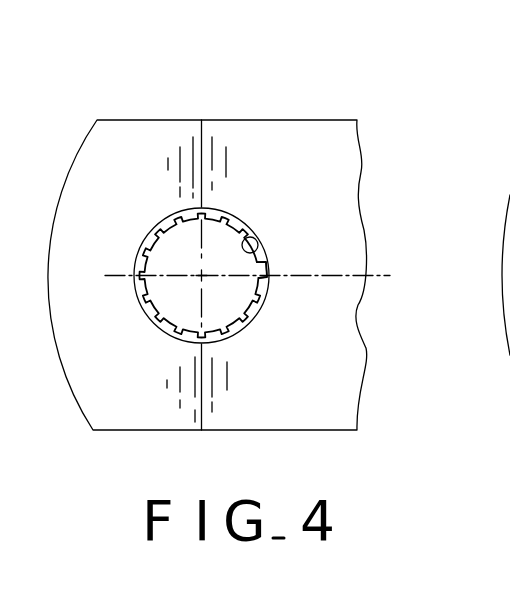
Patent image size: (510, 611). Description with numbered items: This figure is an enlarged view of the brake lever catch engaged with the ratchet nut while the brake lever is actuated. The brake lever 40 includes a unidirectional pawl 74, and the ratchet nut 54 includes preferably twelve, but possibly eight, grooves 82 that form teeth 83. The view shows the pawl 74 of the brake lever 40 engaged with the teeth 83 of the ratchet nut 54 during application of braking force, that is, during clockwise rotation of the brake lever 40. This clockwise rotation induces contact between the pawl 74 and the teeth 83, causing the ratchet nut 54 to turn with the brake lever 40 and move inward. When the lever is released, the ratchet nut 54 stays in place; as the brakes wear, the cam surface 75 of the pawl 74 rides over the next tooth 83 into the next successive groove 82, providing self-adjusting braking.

The brake lever 40 is at (312, 125).
The ratchet nut 54 is at (175, 311).
The unidirectional pawl 74 is at (265, 260).
The cam surface 75 is at (251, 232).
The grooves 82 is at (262, 430).
The teeth 83 is at (258, 300).